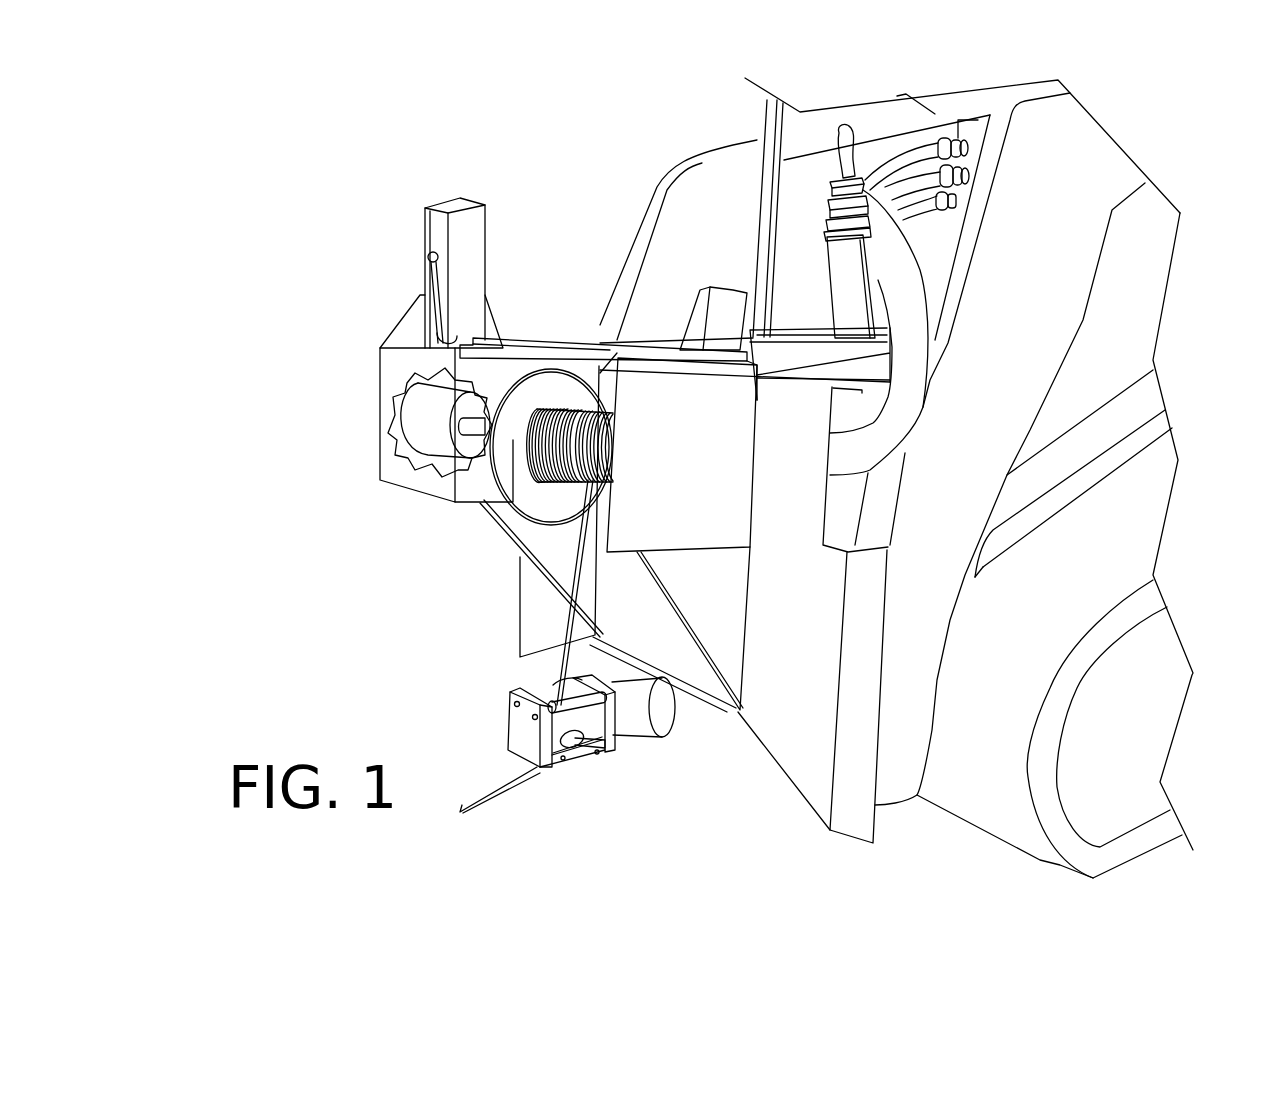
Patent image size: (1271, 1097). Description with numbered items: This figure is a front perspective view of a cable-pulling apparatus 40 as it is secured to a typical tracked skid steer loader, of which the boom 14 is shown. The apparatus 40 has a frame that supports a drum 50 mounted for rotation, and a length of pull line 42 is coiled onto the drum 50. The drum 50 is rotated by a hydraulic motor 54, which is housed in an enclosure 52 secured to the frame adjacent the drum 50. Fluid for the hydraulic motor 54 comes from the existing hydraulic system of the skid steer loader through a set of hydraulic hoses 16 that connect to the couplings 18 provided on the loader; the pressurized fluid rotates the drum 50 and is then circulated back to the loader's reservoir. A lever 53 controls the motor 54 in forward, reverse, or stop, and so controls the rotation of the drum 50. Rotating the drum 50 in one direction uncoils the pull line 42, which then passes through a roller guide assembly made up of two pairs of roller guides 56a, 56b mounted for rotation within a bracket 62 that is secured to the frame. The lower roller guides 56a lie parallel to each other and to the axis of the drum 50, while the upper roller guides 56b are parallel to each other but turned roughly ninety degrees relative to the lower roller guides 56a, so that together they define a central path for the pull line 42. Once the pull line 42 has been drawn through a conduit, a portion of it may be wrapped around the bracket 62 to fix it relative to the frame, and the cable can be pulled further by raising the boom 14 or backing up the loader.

The skid steer loader boom 14 is at (1077, 152).
The hydraulic hoses 16 is at (928, 150).
The couplings 18 is at (958, 120).
The apparatus 40 is at (255, 233).
The pull line 42 is at (562, 572).
The drum 50 is at (535, 385).
The enclosure 52 is at (388, 382).
The lever 53 is at (428, 258).
The hydraulic motor 54 is at (435, 442).
The lower roller guides 56a is at (598, 740).
The upper roller guides 56b is at (550, 697).
The bracket 62 is at (520, 725).